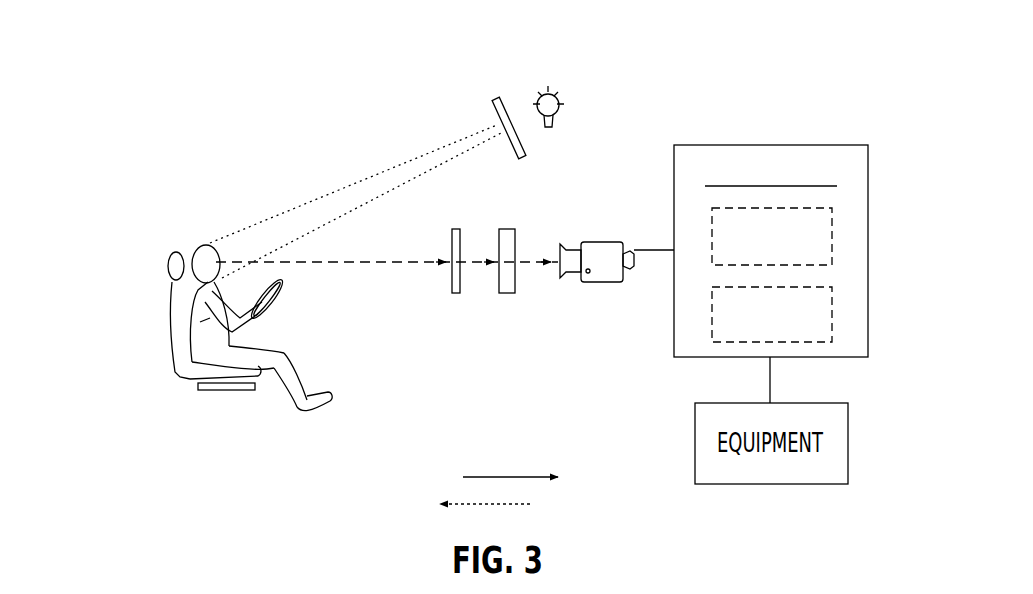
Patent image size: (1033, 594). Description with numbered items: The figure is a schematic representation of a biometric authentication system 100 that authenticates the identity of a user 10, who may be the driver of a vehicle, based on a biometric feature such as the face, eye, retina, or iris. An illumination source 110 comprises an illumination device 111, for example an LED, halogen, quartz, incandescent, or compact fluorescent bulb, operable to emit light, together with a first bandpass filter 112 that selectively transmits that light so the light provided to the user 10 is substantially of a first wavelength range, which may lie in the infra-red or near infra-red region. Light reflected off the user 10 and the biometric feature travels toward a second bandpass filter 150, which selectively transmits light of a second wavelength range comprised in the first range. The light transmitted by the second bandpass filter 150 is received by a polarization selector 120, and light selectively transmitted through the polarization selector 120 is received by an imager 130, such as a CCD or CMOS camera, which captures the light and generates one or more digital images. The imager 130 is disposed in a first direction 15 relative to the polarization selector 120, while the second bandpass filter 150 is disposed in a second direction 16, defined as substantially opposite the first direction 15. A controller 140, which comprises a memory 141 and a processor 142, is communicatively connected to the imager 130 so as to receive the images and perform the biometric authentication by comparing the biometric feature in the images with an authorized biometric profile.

The biometric authentication system 100 is at (158, 118).
The illumination source 110 is at (558, 66).
The illumination device 111 is at (558, 93).
The first bandpass filter 112 is at (505, 105).
The user 10 is at (169, 300).
The second bandpass filter 150 is at (460, 288).
The polarization selector 120 is at (515, 288).
The imager 130 is at (603, 268).
The controller 140 is at (853, 145).
The memory 141 is at (834, 224).
The processor 142 is at (834, 300).
The first direction 15 is at (497, 475).
The second direction 16 is at (501, 503).